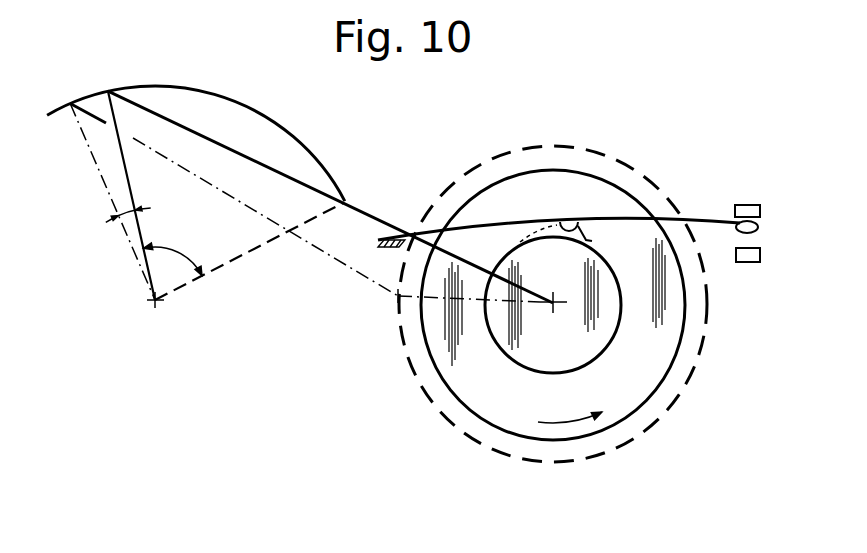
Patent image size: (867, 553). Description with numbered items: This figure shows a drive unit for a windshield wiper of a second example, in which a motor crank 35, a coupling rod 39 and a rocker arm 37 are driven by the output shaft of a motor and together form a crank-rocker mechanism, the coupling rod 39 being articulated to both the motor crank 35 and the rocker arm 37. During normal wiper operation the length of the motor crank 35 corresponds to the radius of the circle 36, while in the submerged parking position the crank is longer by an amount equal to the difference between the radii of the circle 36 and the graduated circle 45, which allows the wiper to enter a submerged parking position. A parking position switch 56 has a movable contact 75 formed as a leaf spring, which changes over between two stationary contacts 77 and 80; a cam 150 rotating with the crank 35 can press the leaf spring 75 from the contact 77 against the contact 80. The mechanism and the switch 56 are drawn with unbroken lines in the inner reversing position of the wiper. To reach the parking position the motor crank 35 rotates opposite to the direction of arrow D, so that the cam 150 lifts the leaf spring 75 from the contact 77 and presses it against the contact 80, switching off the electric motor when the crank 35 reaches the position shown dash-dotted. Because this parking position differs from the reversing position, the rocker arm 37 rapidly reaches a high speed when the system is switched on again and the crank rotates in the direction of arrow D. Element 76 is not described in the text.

The motor crank 35 is at (518, 284).
The circle 36 is at (641, 408).
The rocker arm 37 is at (126, 168).
The coupling rod 39 is at (363, 210).
The graduated circle 45 is at (658, 422).
The parking position switch 56 is at (557, 197).
The movable contact 75 is at (488, 228).
The film guide 76 is at (393, 243).
The stationary contact 77 is at (747, 262).
The stationary contact 80 is at (744, 206).
The cam 150 is at (559, 222).